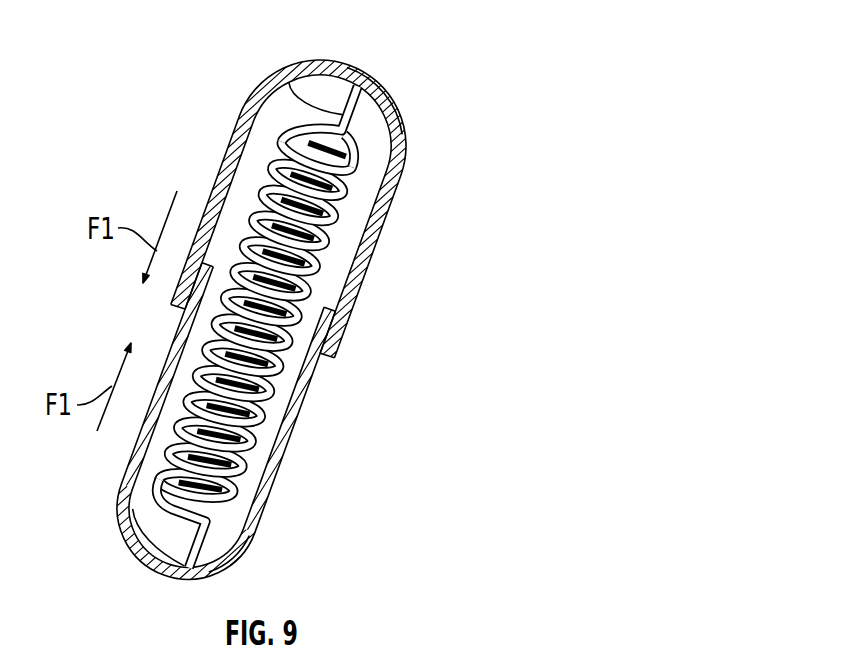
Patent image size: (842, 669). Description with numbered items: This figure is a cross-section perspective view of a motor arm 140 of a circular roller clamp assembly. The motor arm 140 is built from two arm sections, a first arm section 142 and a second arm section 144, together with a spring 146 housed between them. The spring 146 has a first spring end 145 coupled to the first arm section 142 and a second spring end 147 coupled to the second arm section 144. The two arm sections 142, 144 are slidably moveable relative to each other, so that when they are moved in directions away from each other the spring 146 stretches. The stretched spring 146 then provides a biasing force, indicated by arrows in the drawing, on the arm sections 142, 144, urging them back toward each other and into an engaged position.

The motor arm 140 is at (411, 97).
The first arm section 142 is at (397, 189).
The second arm section 144 is at (284, 481).
The first spring end 145 is at (287, 77).
The spring 146 is at (312, 271).
The second spring end 147 is at (131, 508).